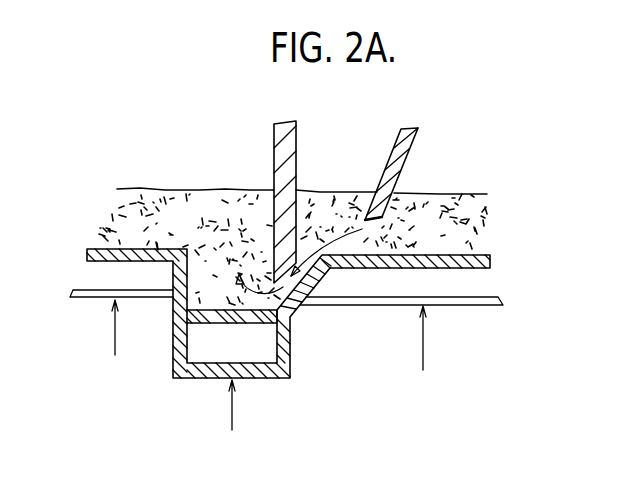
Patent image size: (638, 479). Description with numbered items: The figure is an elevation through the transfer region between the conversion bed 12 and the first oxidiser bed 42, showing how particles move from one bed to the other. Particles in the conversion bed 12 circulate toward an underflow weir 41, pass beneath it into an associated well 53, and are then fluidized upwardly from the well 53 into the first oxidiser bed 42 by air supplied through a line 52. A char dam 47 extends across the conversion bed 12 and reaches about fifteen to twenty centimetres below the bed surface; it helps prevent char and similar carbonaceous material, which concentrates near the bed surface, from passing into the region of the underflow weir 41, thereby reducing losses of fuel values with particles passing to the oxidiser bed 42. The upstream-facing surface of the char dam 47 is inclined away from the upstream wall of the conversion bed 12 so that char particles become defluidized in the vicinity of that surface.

The conversion bed 12 is at (436, 236).
The underflow weir 41 is at (288, 173).
The first oxidiser bed 42 is at (191, 231).
The char dam 47 is at (400, 153).
The air line 52 is at (232, 412).
The well 53 is at (226, 298).